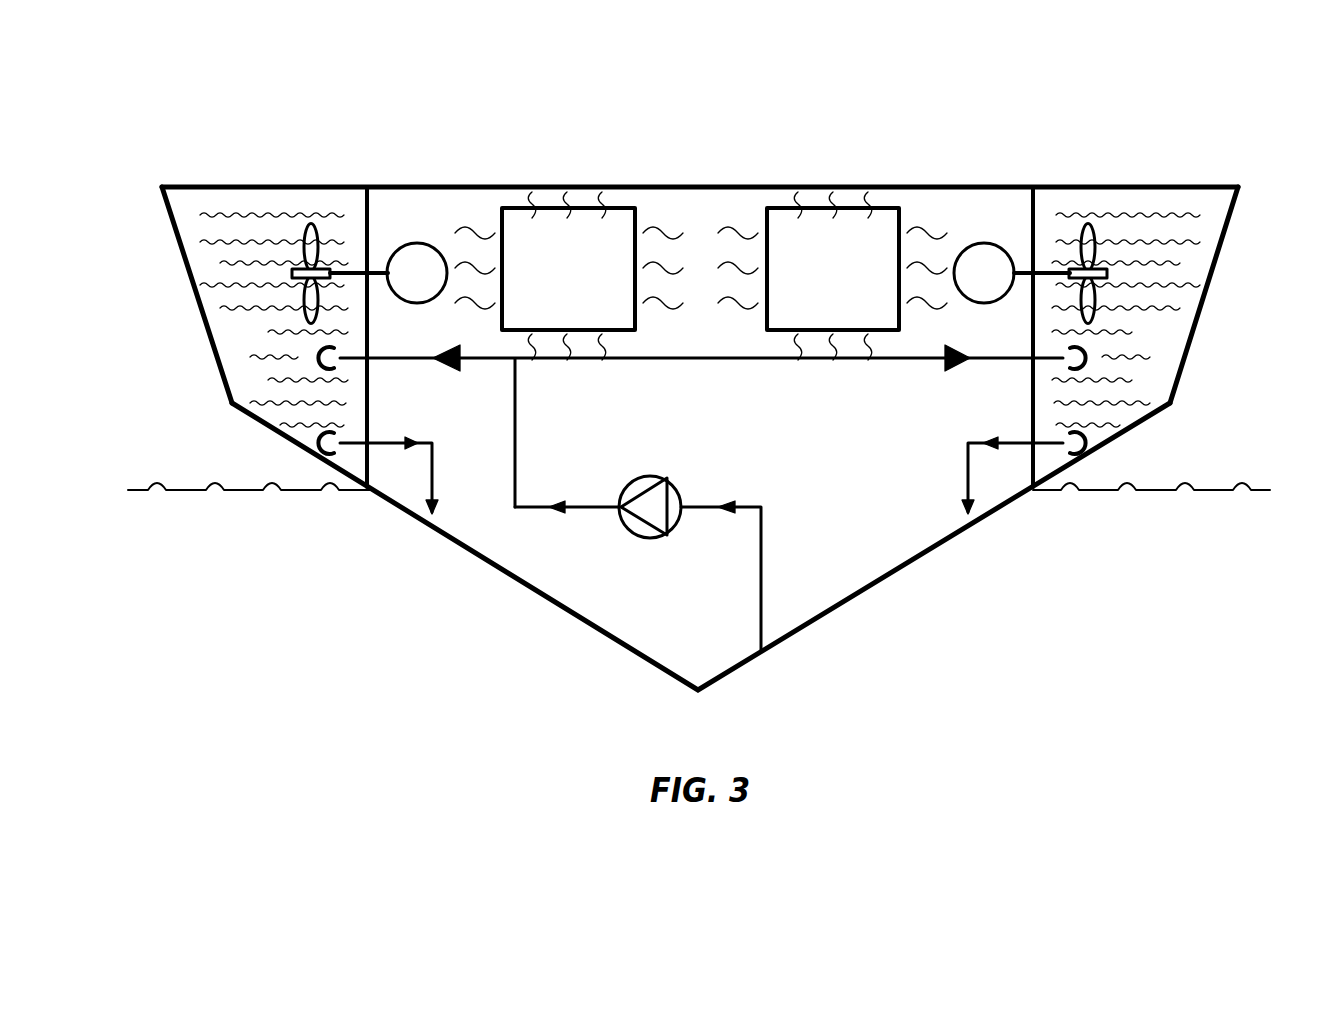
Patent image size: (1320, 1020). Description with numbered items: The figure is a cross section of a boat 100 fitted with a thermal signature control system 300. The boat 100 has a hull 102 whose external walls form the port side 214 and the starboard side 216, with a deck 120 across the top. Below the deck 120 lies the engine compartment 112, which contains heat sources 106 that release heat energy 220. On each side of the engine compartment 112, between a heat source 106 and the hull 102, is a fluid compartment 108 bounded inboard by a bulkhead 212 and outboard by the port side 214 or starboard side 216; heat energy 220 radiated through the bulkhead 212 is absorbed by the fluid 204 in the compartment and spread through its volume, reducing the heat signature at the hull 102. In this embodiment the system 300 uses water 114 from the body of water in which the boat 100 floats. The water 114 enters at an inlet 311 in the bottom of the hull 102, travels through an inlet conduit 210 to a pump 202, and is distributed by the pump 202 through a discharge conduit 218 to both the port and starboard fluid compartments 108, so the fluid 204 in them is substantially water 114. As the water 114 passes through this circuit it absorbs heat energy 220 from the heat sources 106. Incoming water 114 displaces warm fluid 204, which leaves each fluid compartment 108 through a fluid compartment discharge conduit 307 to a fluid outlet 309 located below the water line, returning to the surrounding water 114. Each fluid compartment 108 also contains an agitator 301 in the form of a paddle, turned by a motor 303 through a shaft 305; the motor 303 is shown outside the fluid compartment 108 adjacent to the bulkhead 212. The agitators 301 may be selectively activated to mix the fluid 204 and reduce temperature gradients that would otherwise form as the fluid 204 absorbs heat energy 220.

The boat 100 is at (570, 155).
The thermal signature control system 300 is at (868, 123).
The hull 102 is at (935, 552).
The heat source 106 is at (700, 269).
The fluid compartment 108 is at (198, 214).
The engine compartment 112 is at (983, 322).
The water 114 is at (1135, 594).
The deck 120 is at (700, 187).
The pump 202 is at (628, 532).
The fluid 204 is at (250, 342).
The inlet conduit 210 is at (763, 518).
The bulkhead 212 is at (370, 242).
The port side 214 is at (193, 273).
The starboard side 216 is at (1208, 263).
The discharge conduit 218 is at (775, 360).
The heat energy 220 is at (472, 232).
The agitator 301 is at (304, 223).
The motor 303 is at (700, 273).
The shaft 305 is at (348, 264).
The fluid compartment discharge conduit 307 is at (433, 478).
The fluid outlet 309 is at (427, 536).
The inlet 311 is at (765, 668).